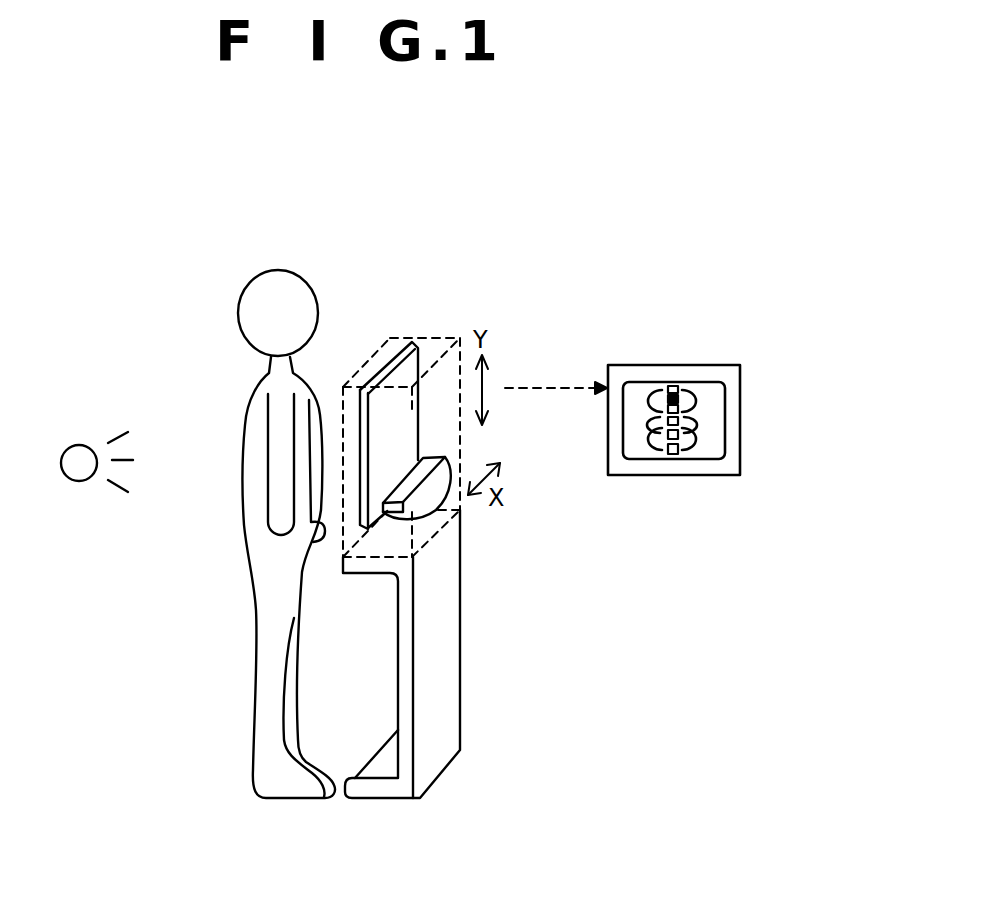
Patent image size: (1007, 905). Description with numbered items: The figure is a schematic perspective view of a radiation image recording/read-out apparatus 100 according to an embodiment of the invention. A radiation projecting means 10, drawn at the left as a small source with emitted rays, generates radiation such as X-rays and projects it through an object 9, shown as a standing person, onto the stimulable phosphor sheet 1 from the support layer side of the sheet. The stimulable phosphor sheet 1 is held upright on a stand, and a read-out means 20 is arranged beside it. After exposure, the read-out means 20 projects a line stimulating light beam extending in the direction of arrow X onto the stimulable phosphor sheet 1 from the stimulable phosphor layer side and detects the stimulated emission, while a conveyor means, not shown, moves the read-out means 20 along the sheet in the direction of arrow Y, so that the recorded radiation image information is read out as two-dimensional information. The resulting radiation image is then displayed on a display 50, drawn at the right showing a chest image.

The radiation image recording/read-out apparatus 100 is at (429, 191).
The object 9 is at (250, 272).
The radiation projecting means 10 is at (78, 445).
The stimulable phosphor sheet 1 is at (420, 348).
The read-out means 20 is at (448, 458).
The display 50 is at (700, 365).